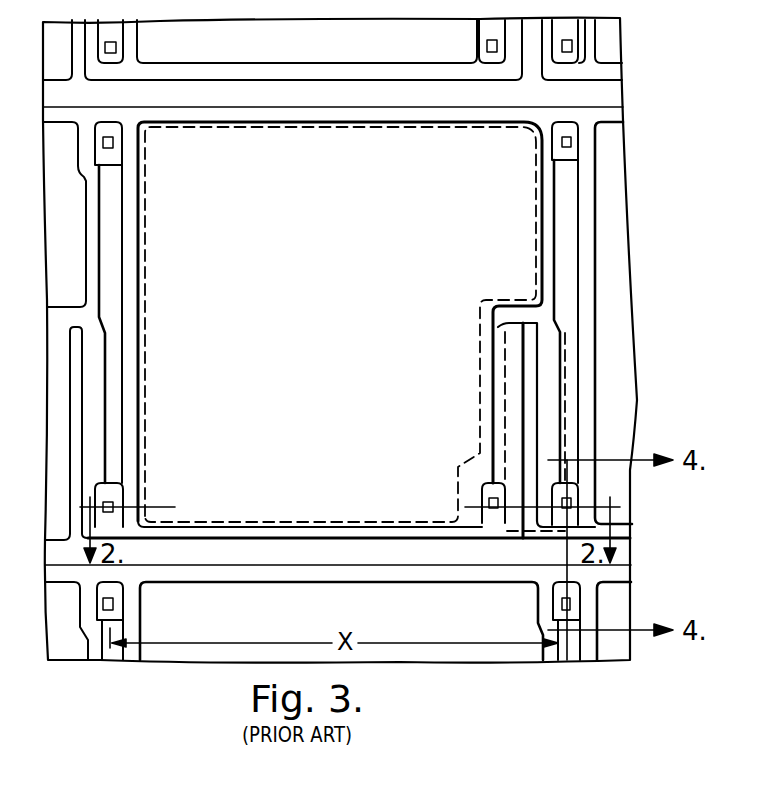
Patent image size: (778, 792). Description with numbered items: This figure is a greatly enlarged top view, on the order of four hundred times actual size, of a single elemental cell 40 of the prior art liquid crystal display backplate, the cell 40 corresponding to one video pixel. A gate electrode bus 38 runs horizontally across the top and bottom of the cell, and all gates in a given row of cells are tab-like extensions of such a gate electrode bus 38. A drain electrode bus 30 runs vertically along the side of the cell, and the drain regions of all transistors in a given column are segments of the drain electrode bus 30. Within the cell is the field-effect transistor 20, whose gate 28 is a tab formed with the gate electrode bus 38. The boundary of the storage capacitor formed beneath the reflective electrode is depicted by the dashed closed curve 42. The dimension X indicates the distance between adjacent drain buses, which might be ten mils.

The field-effect transistor 20 is at (503, 322).
The gate 28 is at (530, 428).
The drain electrode bus 30 is at (560, 220).
The gate electrode bus 38 is at (426, 98).
The elemental cell 40 is at (313, 373).
The closed curve 42 is at (146, 188).